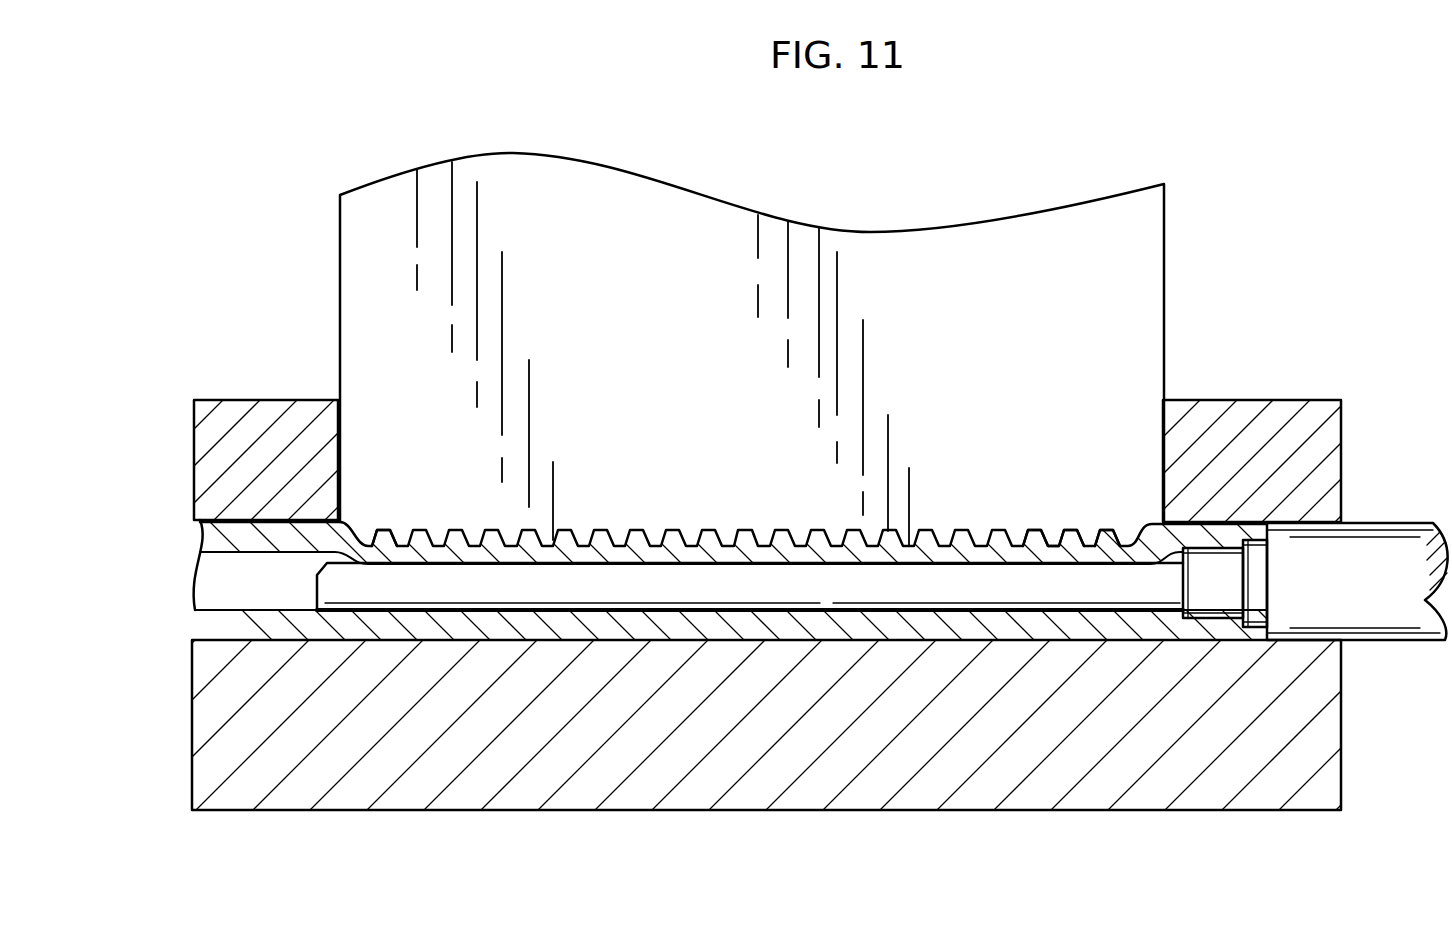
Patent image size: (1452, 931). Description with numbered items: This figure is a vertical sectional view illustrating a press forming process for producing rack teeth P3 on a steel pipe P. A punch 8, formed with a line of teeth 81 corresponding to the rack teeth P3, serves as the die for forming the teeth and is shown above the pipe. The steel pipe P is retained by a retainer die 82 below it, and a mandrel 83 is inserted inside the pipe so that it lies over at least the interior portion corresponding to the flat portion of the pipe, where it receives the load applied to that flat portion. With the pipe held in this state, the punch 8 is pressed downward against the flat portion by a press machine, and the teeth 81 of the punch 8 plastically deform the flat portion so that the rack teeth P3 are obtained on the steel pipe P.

The punch 8 is at (1173, 267).
The teeth 81 is at (688, 546).
The retainer die 82 is at (937, 747).
The mandrel 83 is at (590, 588).
The steel pipe P is at (184, 626).
The rack teeth P3 is at (1068, 528).